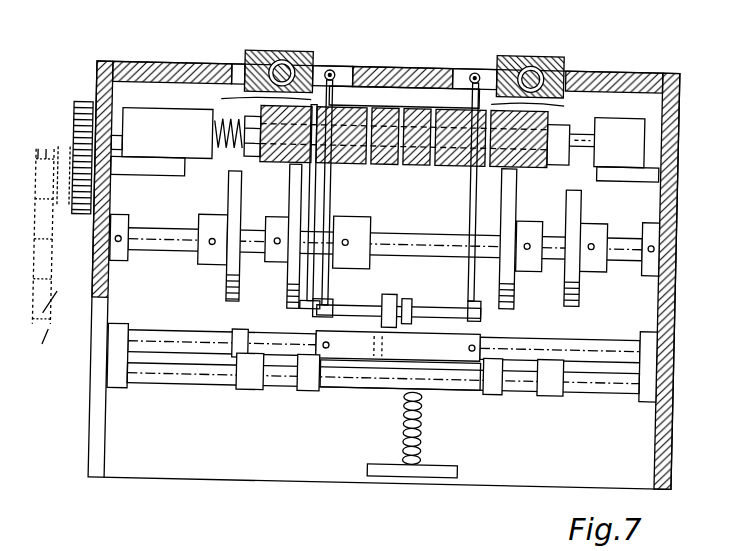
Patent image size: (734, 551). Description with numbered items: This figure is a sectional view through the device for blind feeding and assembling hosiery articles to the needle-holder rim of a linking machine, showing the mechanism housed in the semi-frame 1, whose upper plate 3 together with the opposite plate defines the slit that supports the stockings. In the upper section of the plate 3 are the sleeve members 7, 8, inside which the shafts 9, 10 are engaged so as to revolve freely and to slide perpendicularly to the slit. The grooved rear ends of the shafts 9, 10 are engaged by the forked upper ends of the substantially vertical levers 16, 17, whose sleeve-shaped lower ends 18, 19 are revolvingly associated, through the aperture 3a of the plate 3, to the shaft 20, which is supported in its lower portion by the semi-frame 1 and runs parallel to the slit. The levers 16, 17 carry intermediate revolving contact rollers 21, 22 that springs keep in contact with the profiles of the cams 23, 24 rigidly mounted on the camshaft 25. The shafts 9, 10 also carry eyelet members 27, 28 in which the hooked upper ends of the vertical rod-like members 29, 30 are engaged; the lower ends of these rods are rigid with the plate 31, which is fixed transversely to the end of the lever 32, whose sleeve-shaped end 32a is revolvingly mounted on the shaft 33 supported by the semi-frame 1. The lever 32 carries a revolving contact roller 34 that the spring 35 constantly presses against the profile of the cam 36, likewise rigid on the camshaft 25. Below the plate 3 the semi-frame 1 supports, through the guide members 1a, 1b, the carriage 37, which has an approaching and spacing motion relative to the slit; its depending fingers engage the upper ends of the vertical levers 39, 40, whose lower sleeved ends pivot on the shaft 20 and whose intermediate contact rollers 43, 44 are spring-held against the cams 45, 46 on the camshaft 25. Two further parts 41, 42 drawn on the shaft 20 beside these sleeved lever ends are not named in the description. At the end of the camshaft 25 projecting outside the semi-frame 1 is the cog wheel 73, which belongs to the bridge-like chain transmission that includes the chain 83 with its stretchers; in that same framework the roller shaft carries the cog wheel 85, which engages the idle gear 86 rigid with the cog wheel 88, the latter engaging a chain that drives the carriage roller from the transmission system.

The semi-frame 1 is at (114, 290).
The guide member 1a is at (625, 170).
The guide member 1b is at (152, 176).
The upper plate 3 is at (176, 62).
The aperture 3a is at (236, 61).
The sleeve member 7 is at (263, 48).
The sleeve member 8 is at (562, 50).
The shaft 9 is at (296, 57).
The shaft 10 is at (530, 52).
The lever 16 is at (254, 112).
The lever 17 is at (565, 115).
The sleeve-shaped lever end 18 is at (310, 387).
The sleeve-shaped lever end 19 is at (505, 387).
The shaft 20 is at (200, 383).
The contact roller 21 is at (292, 290).
The contact roller 22 is at (519, 284).
The cam 23 is at (292, 182).
The cam 24 is at (513, 186).
The camshaft 25 is at (425, 228).
The eyelet member 27 is at (333, 64).
The eyelet member 28 is at (478, 63).
The rod-like member 29 is at (342, 170).
The rod-like member 30 is at (473, 170).
The plate 31 is at (398, 347).
The lever 32 is at (420, 300).
The sleeve-shaped lever end 32a is at (345, 383).
The shaft 33 is at (168, 330).
The contact roller 34 is at (392, 290).
The spring 35 is at (432, 418).
The cam 36 is at (372, 224).
The carriage 37 is at (137, 116).
The lever 39 is at (246, 326).
The lever 40 is at (548, 330).
The collar 41 is at (253, 387).
The collar 42 is at (560, 387).
The contact roller 43 is at (204, 220).
The contact roller 44 is at (584, 204).
The cam 45 is at (231, 186).
The cam 46 is at (584, 290).
The cog wheel 73 is at (46, 335).
The chain 83 is at (55, 330).
The cog wheel 85 is at (78, 102).
The gear 86 is at (68, 150).
The cog wheel 88 is at (55, 152).